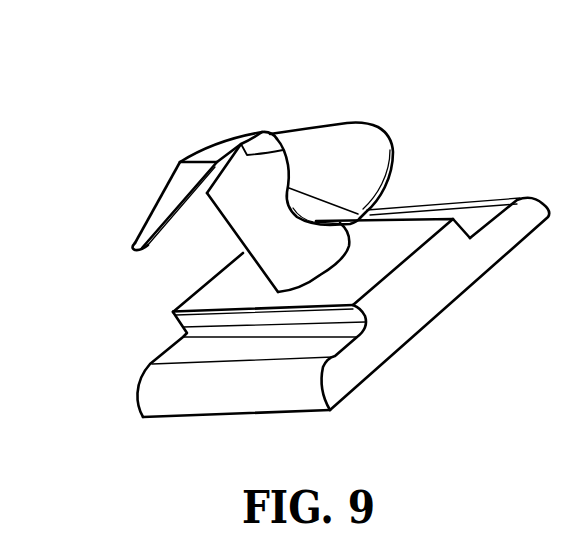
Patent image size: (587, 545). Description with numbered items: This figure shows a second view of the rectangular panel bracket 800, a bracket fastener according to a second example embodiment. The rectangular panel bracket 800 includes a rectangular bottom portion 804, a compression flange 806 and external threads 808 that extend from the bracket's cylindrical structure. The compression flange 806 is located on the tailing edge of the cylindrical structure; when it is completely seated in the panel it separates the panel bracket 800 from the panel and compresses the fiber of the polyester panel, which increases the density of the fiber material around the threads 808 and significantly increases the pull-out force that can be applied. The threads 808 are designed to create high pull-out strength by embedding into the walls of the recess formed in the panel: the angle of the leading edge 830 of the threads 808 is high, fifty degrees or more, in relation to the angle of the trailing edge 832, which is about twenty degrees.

The rectangular panel bracket 800 is at (148, 70).
The rectangular bottom portion 804 is at (245, 398).
The compression flange 806 is at (400, 240).
The external threads 808 is at (148, 221).
The leading edge 830 is at (137, 247).
The trailing edge 832 is at (362, 210).